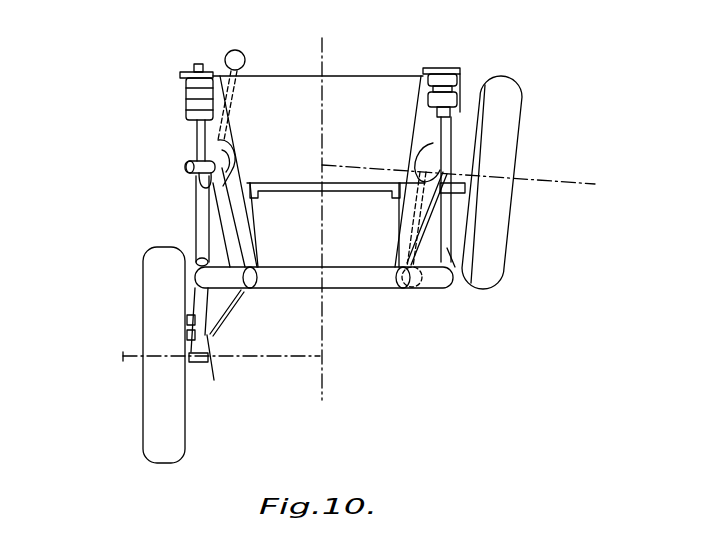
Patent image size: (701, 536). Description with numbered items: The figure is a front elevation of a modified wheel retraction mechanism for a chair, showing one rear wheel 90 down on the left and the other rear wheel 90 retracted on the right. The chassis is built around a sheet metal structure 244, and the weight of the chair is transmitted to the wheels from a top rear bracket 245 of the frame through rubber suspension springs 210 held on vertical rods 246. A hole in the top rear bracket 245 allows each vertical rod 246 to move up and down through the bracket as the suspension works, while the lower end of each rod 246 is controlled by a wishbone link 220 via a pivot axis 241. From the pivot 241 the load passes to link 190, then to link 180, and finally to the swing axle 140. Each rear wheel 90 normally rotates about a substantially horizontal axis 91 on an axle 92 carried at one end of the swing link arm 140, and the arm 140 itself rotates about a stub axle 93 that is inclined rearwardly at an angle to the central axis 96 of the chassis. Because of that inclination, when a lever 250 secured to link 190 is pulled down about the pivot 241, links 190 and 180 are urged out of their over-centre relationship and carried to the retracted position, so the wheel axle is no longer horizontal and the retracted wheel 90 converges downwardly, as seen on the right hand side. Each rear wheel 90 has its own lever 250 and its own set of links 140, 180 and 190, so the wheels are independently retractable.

The rear wheel 90 is at (153, 428).
The horizontal axis 91 is at (130, 358).
The axle 92 is at (209, 380).
The stub axle 93 is at (243, 293).
The central axis 96 is at (322, 47).
The swing axle 140 is at (212, 337).
The link 180 is at (450, 147).
The link 190 is at (195, 203).
The rubber suspension spring 210 is at (187, 97).
The wishbone link 220 is at (189, 167).
The pivot axis 241 is at (228, 152).
The sheet metal structure 244 is at (354, 84).
The top rear bracket 245 is at (461, 86).
The vertical rod 246 is at (192, 135).
The lever 250 is at (237, 51).